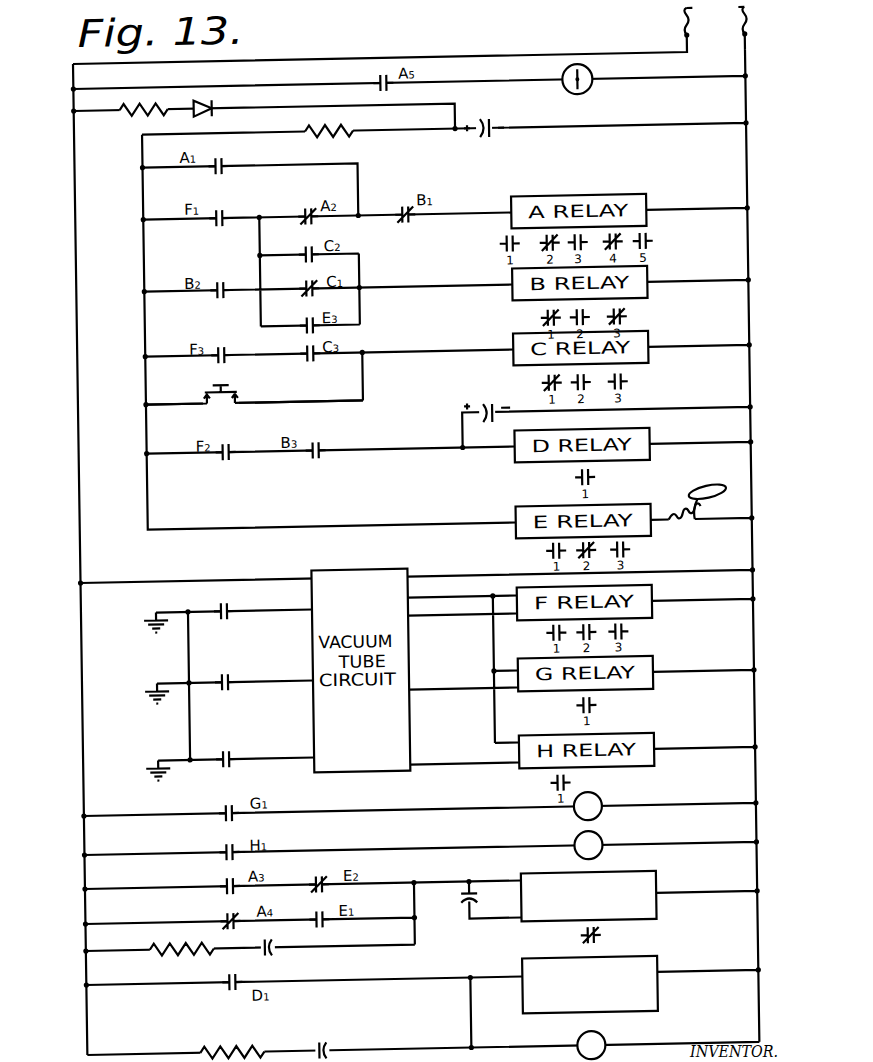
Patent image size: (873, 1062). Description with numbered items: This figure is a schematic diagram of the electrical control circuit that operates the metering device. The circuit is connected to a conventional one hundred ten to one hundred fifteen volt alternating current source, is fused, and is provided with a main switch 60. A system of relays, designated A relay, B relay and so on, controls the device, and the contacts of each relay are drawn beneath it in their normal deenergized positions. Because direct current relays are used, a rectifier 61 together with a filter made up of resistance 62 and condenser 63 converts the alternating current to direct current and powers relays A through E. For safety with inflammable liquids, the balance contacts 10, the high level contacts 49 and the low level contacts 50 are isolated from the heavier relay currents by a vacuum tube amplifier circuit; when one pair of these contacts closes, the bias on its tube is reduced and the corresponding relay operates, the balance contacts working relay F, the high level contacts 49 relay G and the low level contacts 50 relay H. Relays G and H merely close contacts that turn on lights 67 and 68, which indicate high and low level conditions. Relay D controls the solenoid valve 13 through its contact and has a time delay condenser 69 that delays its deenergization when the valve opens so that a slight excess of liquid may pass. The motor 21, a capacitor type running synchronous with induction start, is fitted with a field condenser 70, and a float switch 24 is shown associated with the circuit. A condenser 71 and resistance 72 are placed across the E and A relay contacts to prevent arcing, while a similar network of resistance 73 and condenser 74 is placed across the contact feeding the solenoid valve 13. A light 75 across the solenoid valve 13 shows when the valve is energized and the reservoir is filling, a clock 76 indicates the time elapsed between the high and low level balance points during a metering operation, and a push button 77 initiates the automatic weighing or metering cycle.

The main switch 60 is at (741, 56).
The clock 76 is at (589, 100).
The rectifier 61 is at (190, 112).
The resistance 62 is at (356, 136).
The condenser 63 is at (504, 132).
The push button 77 is at (212, 398).
The time delay condenser 69 is at (499, 421).
The float switch 24 is at (608, 957).
The balance contacts 10 is at (227, 627).
The high level contacts 49 is at (224, 699).
The low level contacts 50 is at (232, 775).
The light 67 is at (596, 799).
The light 68 is at (587, 845).
The motor 21 is at (589, 896).
The field condenser 70 is at (455, 909).
The condenser 71 is at (260, 954).
The resistance 72 is at (184, 958).
The solenoid valve 13 is at (590, 985).
The resistance 73 is at (229, 1048).
The condenser 74 is at (309, 1046).
The light 75 is at (587, 1045).